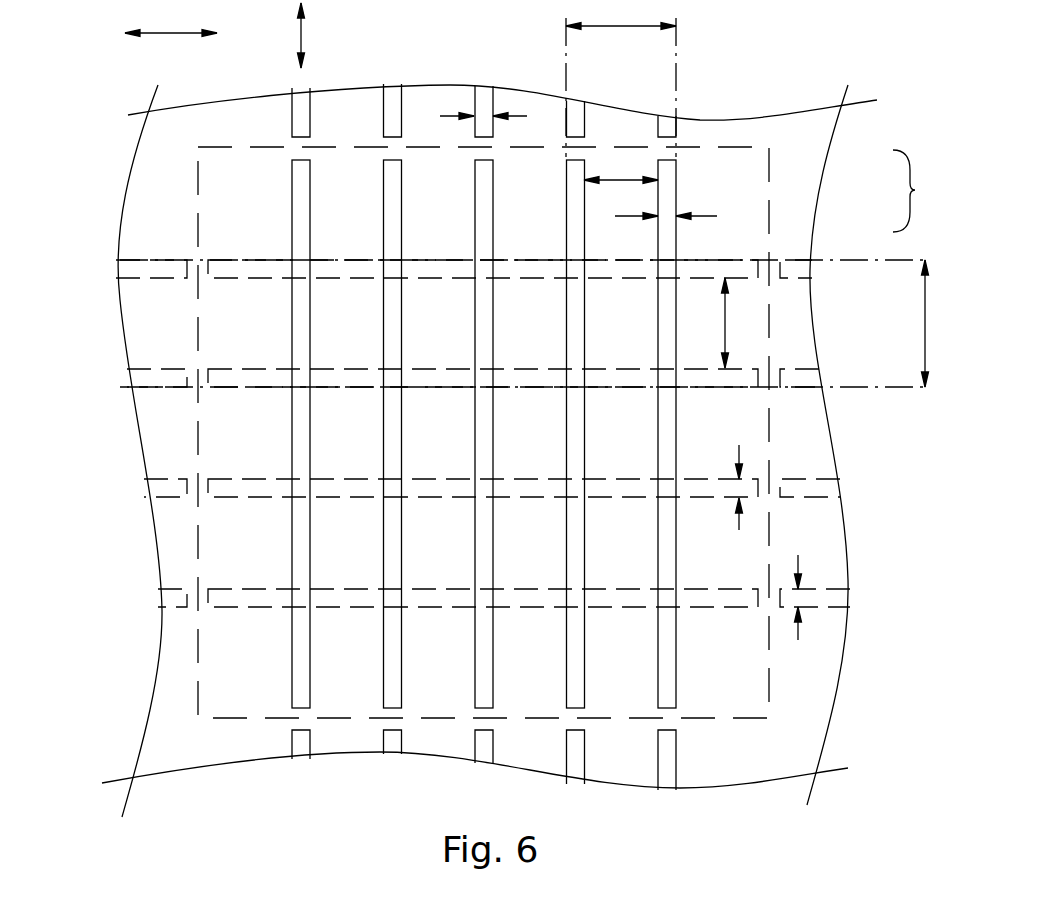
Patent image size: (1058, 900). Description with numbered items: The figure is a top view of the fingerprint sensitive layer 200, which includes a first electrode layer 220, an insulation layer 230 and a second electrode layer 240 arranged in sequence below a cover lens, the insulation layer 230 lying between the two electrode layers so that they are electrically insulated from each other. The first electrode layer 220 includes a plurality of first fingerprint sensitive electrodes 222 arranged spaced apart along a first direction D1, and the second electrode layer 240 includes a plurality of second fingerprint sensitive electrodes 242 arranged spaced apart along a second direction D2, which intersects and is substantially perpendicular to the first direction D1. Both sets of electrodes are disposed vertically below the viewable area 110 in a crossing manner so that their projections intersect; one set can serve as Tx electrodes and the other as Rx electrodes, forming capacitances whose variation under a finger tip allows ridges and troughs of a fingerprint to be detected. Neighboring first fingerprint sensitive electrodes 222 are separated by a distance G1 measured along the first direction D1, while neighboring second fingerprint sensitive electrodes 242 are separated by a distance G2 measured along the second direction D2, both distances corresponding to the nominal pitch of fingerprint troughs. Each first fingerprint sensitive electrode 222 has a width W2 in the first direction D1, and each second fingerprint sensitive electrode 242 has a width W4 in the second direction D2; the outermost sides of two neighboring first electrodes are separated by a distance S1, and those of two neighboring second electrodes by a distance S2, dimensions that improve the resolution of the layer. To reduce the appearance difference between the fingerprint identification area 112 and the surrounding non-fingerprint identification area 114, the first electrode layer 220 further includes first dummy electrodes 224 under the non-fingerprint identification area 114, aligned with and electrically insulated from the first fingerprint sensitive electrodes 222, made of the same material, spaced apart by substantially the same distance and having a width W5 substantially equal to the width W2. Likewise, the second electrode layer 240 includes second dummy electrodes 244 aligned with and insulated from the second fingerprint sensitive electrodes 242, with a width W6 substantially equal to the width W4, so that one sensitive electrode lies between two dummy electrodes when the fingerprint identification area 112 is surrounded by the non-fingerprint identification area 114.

The fingerprint sensitive layer 200 is at (93, 25).
The viewable area 110 is at (928, 191).
The fingerprint identification area 112 is at (750, 197).
The non-fingerprint identification area 114 is at (806, 160).
The first electrode layer 220 is at (428, 416).
The first fingerprint sensitive electrode 222 is at (300, 190).
The first dummy electrode 224 is at (300, 110).
The insulation layer 230 is at (787, 767).
The second electrode layer 240 is at (447, 433).
The second fingerprint sensitive electrode 242 is at (238, 380).
The second dummy electrode 244 is at (165, 378).
The first direction D1 is at (171, 20).
The second direction D2 is at (320, 35).
The width of first dummy electrode W5 is at (480, 118).
The distance between outermost sides of neighboring first fingerprint sensitive elec S1 is at (621, 78).
The distance between neighboring first fingerprint sensitive electrodes G1 is at (622, 180).
The width of first fingerprint sensitive electrode W2 is at (668, 212).
The distance between neighboring second fingerprint sensitive electrodes G2 is at (725, 323).
The distance between outermost sides of neighboring second fingerprint sensitive ele S2 is at (530, 323).
The width of second fingerprint sensitive electrode W4 is at (740, 488).
The width of second dummy electrode W6 is at (800, 598).